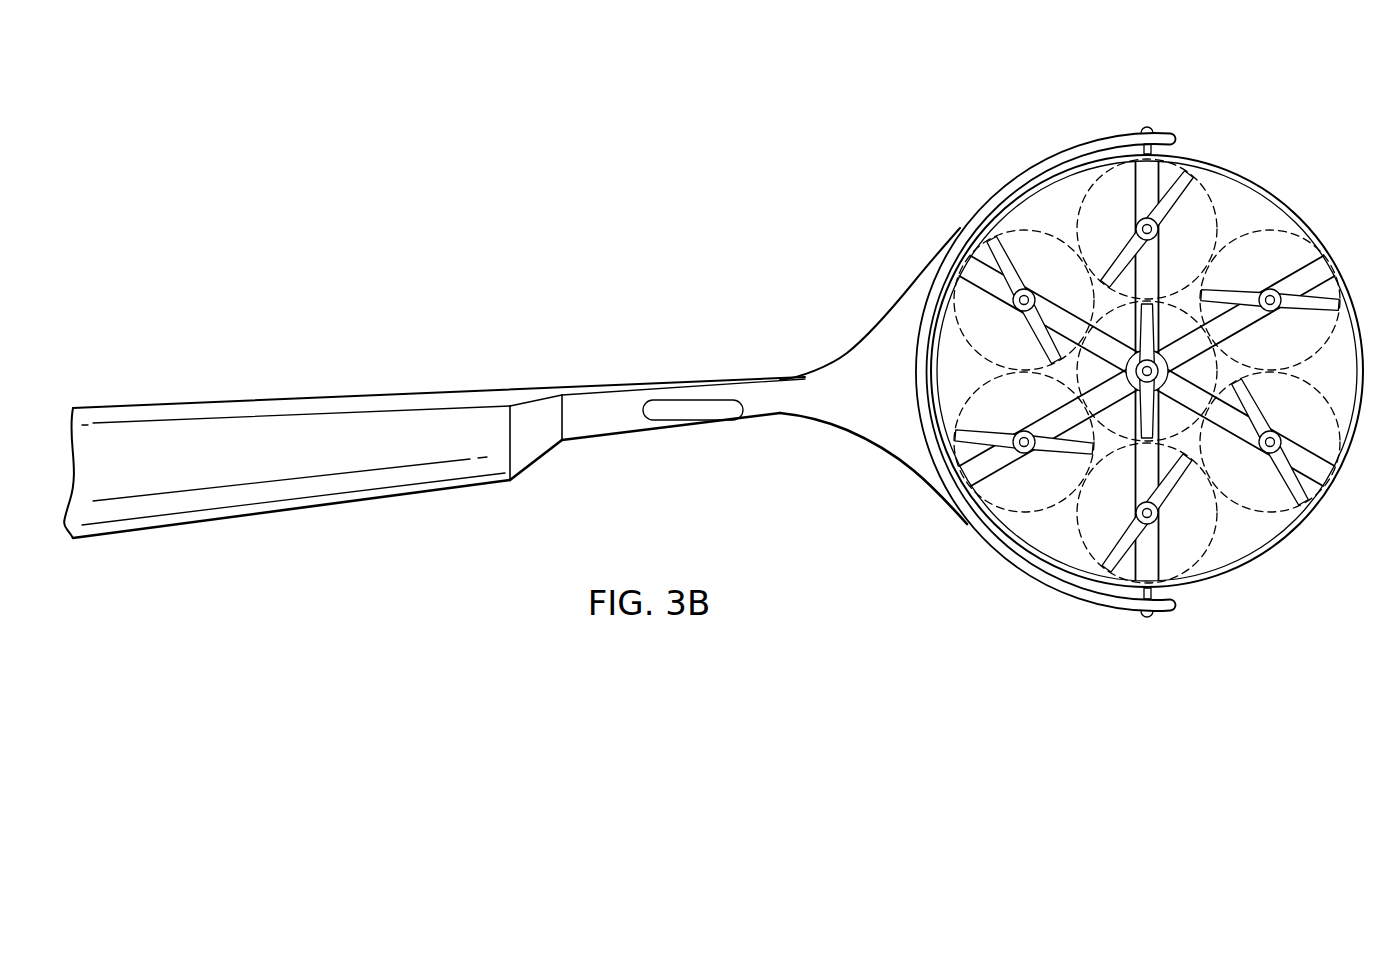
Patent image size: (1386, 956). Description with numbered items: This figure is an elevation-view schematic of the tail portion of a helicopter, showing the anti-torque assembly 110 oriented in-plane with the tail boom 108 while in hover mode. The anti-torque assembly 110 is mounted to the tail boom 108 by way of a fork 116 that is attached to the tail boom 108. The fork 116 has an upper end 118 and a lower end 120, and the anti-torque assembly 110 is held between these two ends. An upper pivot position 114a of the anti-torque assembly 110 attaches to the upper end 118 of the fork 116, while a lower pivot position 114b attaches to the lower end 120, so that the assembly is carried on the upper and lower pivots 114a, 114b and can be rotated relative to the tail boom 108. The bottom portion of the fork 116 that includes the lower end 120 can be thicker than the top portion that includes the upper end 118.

The tail boom 108 is at (294, 403).
The anti-torque assembly 110 is at (1144, 372).
The upper pivot position 114a is at (1148, 126).
The lower pivot position 114b is at (1147, 620).
The fork 116 is at (925, 261).
The upper end 118 is at (1001, 186).
The lower end 120 is at (1003, 566).